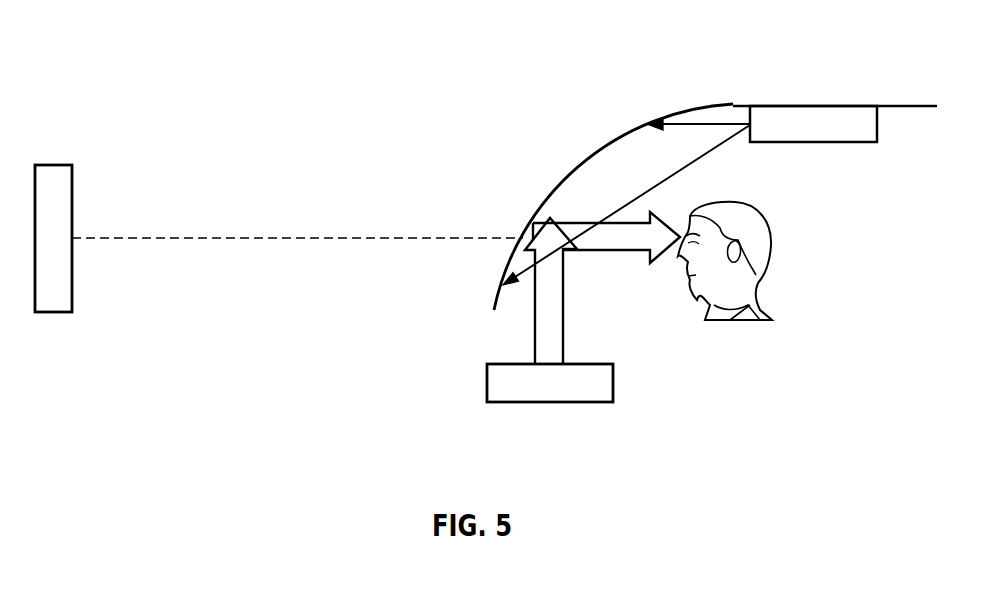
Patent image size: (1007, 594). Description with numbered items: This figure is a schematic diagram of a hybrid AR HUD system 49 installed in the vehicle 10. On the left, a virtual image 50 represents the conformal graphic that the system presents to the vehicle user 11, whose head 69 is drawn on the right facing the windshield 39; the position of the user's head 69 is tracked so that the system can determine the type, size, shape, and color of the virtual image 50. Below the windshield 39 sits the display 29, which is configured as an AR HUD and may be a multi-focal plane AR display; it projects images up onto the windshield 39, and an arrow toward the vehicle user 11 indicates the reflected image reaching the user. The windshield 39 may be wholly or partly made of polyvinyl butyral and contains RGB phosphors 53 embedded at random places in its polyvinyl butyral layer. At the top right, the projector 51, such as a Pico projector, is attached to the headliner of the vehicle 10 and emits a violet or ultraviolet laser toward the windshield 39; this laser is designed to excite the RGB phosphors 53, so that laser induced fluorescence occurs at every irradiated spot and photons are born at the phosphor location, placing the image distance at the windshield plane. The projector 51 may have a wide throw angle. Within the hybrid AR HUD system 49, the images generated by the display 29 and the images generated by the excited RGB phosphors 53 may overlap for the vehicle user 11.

The vehicle 10 is at (877, 68).
The vehicle user 11 is at (776, 270).
The display 29 is at (550, 402).
The windshield 39 is at (580, 165).
The hybrid AR HUD system 49 is at (650, 44).
The virtual image 50 is at (72, 180).
The projector 51 is at (863, 142).
The RGB phosphors 53 is at (732, 106).
The head 69 is at (758, 213).